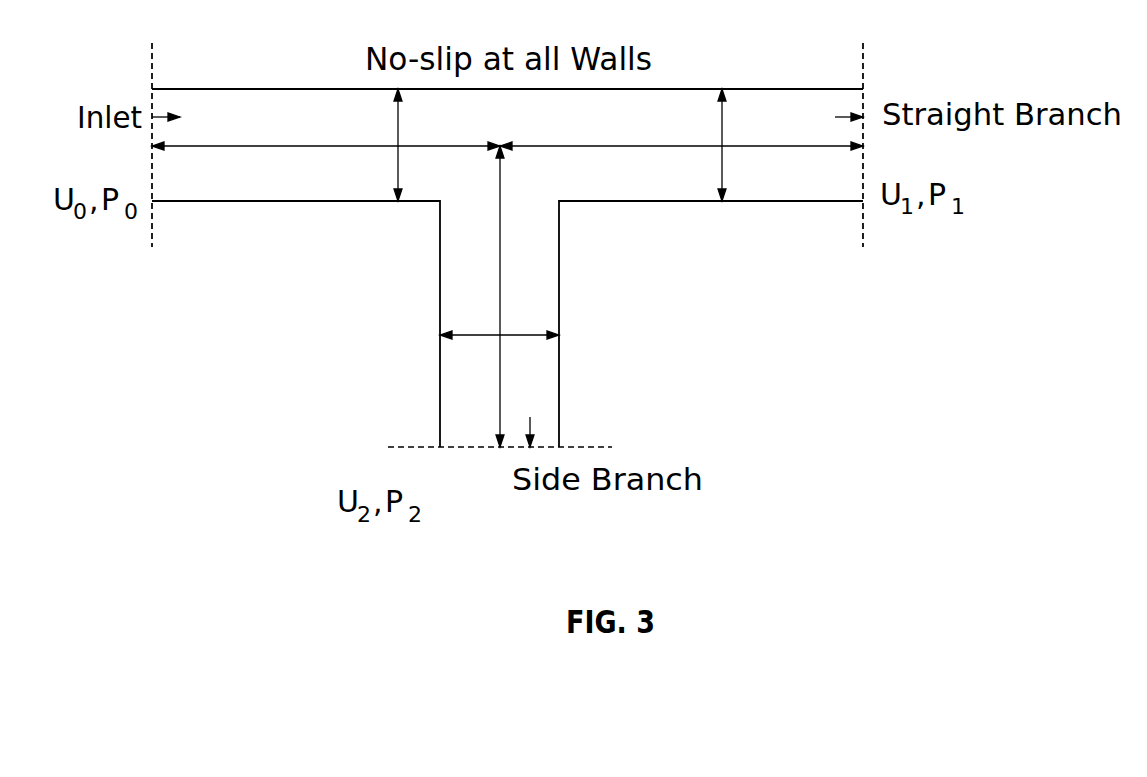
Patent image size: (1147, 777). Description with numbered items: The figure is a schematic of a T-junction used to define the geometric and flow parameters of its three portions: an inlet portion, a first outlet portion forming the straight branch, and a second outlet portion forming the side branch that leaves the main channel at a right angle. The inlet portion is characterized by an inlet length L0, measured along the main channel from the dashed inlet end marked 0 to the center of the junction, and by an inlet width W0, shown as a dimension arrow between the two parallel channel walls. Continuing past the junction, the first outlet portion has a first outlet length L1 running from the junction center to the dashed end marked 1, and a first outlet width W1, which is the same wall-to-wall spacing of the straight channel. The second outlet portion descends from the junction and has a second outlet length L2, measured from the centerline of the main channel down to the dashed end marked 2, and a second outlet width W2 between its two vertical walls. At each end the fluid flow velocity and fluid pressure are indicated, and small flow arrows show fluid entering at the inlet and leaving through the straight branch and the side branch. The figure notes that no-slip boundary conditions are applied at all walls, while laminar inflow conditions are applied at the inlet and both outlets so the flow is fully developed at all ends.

The inlet width W0 is at (396, 119).
The first outlet width W1 is at (724, 115).
The second outlet width W2 is at (525, 333).
The inlet length L0 is at (233, 146).
The first outlet length L1 is at (600, 146).
The second outlet length L2 is at (500, 230).
The inlet station 0 is at (154, 161).
The straight branch outlet station 1 is at (871, 161).
The side branch outlet station 2 is at (488, 449).